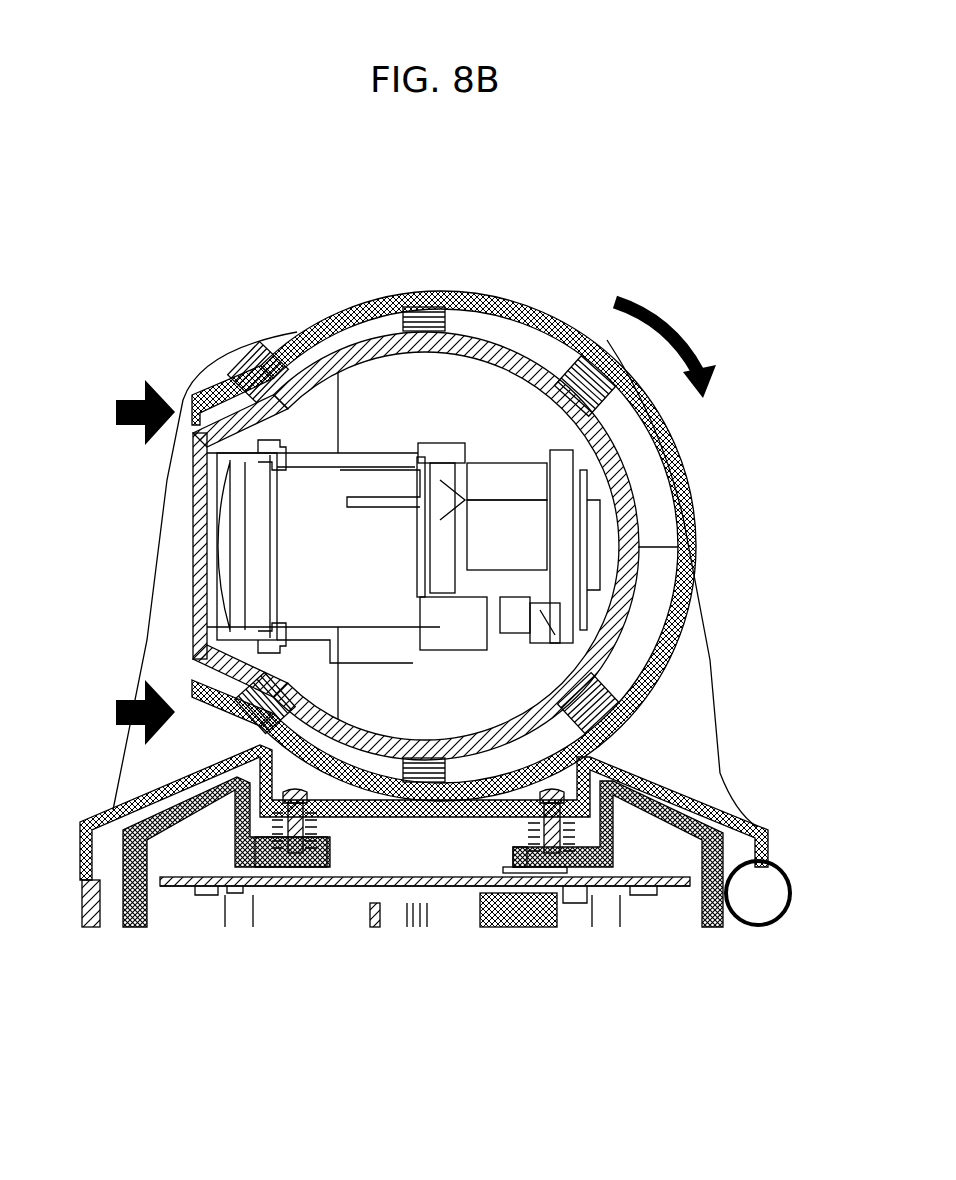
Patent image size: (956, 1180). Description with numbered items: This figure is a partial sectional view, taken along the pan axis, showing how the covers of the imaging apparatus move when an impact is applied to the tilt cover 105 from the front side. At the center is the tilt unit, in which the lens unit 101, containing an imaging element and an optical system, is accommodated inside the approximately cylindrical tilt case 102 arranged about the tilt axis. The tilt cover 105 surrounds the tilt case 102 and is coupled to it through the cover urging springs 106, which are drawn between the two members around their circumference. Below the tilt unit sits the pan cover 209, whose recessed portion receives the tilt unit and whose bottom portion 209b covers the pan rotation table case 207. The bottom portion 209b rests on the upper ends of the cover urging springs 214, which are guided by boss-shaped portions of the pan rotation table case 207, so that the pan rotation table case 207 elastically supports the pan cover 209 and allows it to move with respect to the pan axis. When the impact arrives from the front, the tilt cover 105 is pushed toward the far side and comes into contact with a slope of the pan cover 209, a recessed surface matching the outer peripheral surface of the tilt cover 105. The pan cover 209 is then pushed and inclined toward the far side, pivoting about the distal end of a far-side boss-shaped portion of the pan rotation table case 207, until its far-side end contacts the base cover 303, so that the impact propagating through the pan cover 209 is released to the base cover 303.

The lens unit 101 is at (230, 552).
The tilt case 102 is at (322, 362).
The tilt cover 105 is at (692, 514).
The cover urging springs 106 is at (432, 305).
The pan rotation table case 207 is at (517, 852).
The pan cover 209 is at (700, 748).
The bottom portion 209b is at (338, 800).
The cover urging springs 214 is at (283, 850).
The base cover 303 is at (758, 926).